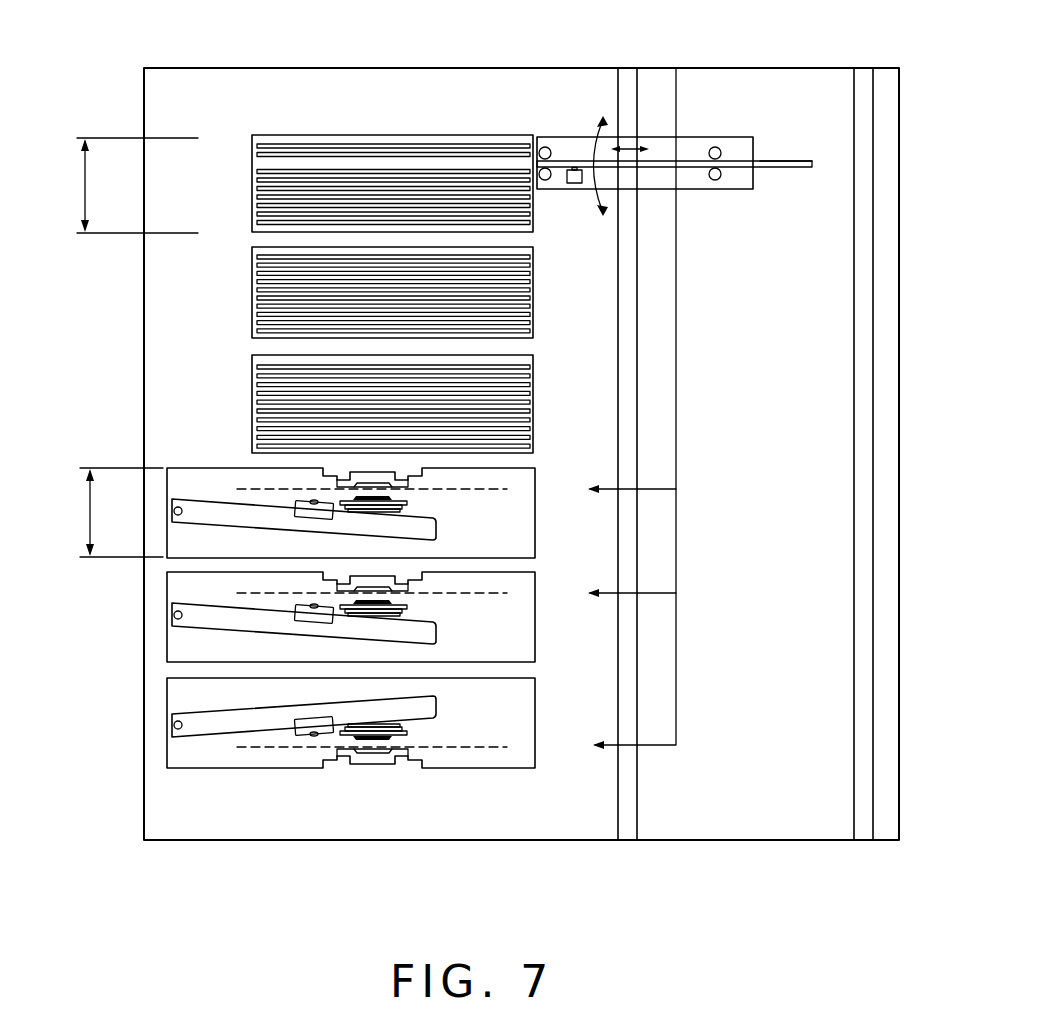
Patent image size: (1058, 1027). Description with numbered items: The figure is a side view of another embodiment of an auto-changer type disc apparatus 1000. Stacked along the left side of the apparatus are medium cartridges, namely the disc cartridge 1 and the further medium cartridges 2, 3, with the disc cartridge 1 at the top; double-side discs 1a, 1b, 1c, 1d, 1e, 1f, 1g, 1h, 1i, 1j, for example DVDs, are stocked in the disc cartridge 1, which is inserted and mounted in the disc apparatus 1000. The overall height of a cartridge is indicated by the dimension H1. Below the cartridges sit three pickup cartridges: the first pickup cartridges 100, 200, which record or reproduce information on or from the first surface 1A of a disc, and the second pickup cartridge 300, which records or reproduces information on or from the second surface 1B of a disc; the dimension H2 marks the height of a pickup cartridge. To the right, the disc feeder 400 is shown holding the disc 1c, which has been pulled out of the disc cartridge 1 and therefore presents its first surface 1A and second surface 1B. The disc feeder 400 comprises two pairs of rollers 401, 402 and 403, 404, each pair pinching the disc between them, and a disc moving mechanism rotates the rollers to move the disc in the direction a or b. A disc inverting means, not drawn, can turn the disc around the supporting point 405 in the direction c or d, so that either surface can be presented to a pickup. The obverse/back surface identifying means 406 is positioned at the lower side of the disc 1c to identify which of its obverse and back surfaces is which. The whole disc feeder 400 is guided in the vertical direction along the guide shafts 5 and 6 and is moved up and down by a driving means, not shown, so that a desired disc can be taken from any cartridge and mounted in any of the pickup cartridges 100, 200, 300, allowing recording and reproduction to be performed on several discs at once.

The disc cartridge 1 is at (361, 176).
The double-side disc 1a is at (258, 146).
The double-side disc 1b is at (258, 155).
The double-side disc 1c is at (805, 162).
The double-side disc 1d is at (258, 171).
The double-side disc 1e is at (258, 180).
The double-side disc 1f is at (258, 188).
The double-side disc 1g is at (258, 197).
The double-side disc 1h is at (258, 205).
The double-side disc 1i is at (258, 214).
The double-side disc 1j is at (258, 223).
The first surface 1A is at (480, 492).
The second surface 1B is at (772, 160).
The medium cartridge 2 is at (252, 310).
The medium cartridge 3 is at (252, 396).
The guide shaft 5 is at (617, 80).
The guide shaft 6 is at (853, 88).
The first pickup cartridge 100 is at (168, 488).
The first pickup cartridge 200 is at (168, 645).
The second pickup cartridge 300 is at (168, 754).
The disc feeder 400 is at (631, 144).
The roller 401 is at (542, 147).
The roller 402 is at (548, 180).
The roller 403 is at (715, 147).
The roller 404 is at (716, 180).
The supporting point 405 is at (673, 170).
The obverse/back surface identifying means 406 is at (578, 184).
The auto-changer type disc apparatus 1000 is at (342, 897).
The rack height H1 is at (124, 185).
The drive height H2 is at (102, 512).
The disc moving direction a is at (624, 150).
The disc moving direction b is at (660, 150).
The disc inverting direction c is at (601, 152).
The disc inverting direction d is at (603, 225).